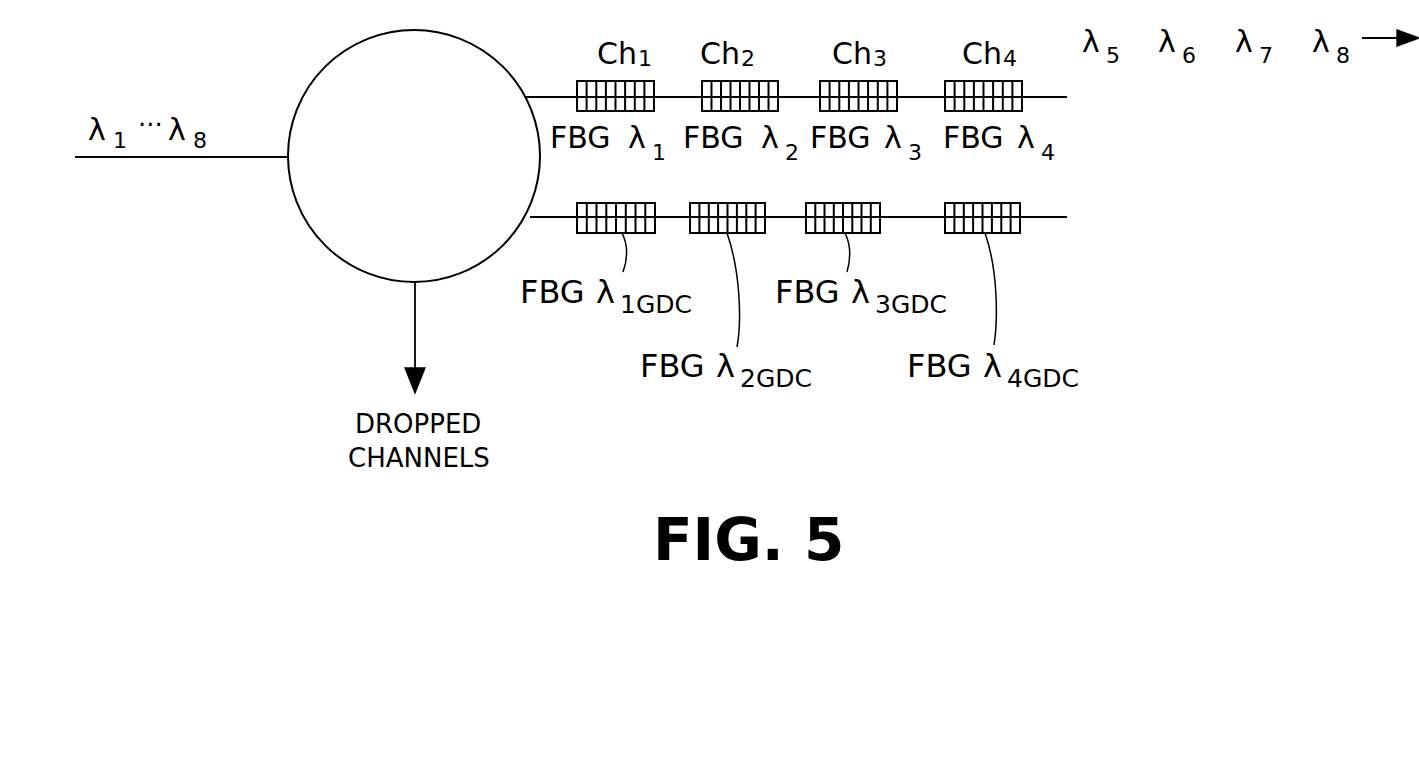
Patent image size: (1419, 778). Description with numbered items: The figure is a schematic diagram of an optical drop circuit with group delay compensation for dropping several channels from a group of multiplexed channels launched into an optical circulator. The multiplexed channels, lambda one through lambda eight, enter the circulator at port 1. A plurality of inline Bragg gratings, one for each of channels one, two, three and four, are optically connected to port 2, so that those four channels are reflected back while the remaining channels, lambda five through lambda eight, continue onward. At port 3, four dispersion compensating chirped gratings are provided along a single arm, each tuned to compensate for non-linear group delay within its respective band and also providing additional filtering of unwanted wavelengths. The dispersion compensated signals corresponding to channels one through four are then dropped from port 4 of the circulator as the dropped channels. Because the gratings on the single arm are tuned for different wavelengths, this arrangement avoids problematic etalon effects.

The port 1 is at (202, 158).
The port 2 is at (779, 101).
The port 3 is at (779, 216).
The port 4 is at (415, 317).